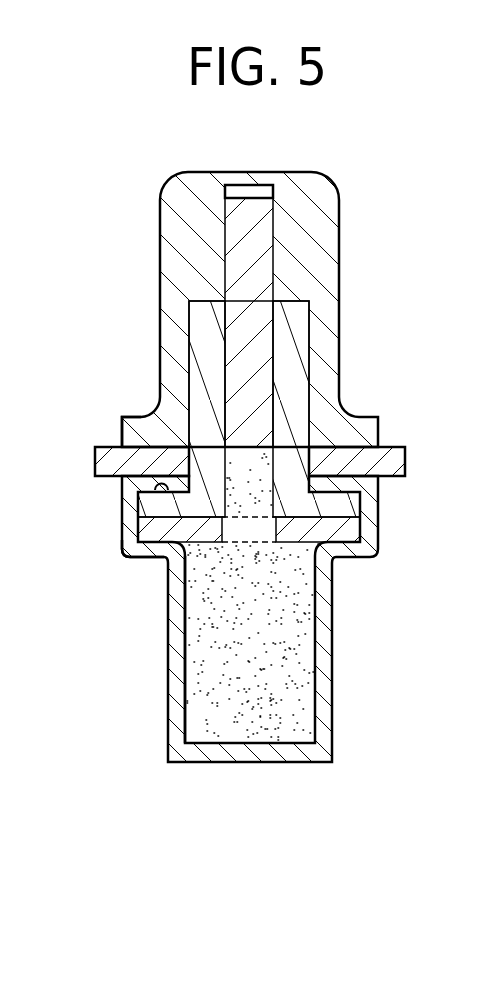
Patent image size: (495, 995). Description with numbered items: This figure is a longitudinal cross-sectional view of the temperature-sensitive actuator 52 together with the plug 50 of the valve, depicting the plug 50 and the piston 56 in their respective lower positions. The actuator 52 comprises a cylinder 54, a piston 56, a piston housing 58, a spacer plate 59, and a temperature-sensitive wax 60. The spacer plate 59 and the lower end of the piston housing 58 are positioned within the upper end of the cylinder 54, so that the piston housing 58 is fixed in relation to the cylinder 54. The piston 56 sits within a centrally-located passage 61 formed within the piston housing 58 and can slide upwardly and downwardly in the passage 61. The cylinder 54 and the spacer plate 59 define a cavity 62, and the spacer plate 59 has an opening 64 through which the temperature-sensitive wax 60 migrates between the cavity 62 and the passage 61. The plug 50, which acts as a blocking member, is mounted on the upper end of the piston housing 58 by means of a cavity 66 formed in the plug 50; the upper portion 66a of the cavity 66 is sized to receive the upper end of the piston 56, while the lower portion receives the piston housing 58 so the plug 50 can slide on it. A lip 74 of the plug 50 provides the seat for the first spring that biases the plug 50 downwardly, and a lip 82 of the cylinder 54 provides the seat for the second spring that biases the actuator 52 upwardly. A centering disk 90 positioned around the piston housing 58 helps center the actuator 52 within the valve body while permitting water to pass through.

The plug 50 is at (158, 186).
The temperature-sensitive actuator 52 is at (362, 178).
The cylinder 54 is at (325, 632).
The piston 56 is at (260, 337).
The piston housing 58 is at (205, 334).
The spacer plate 59 is at (150, 522).
The temperature-sensitive wax 60 is at (197, 688).
The passage 61 is at (252, 477).
The cavity 62 is at (180, 634).
The opening 64 is at (270, 543).
The cavity 66 is at (272, 181).
The upper portion 66a is at (241, 187).
The lip 74 is at (132, 430).
The lip 82 is at (143, 558).
The centering disk 90 is at (392, 447).